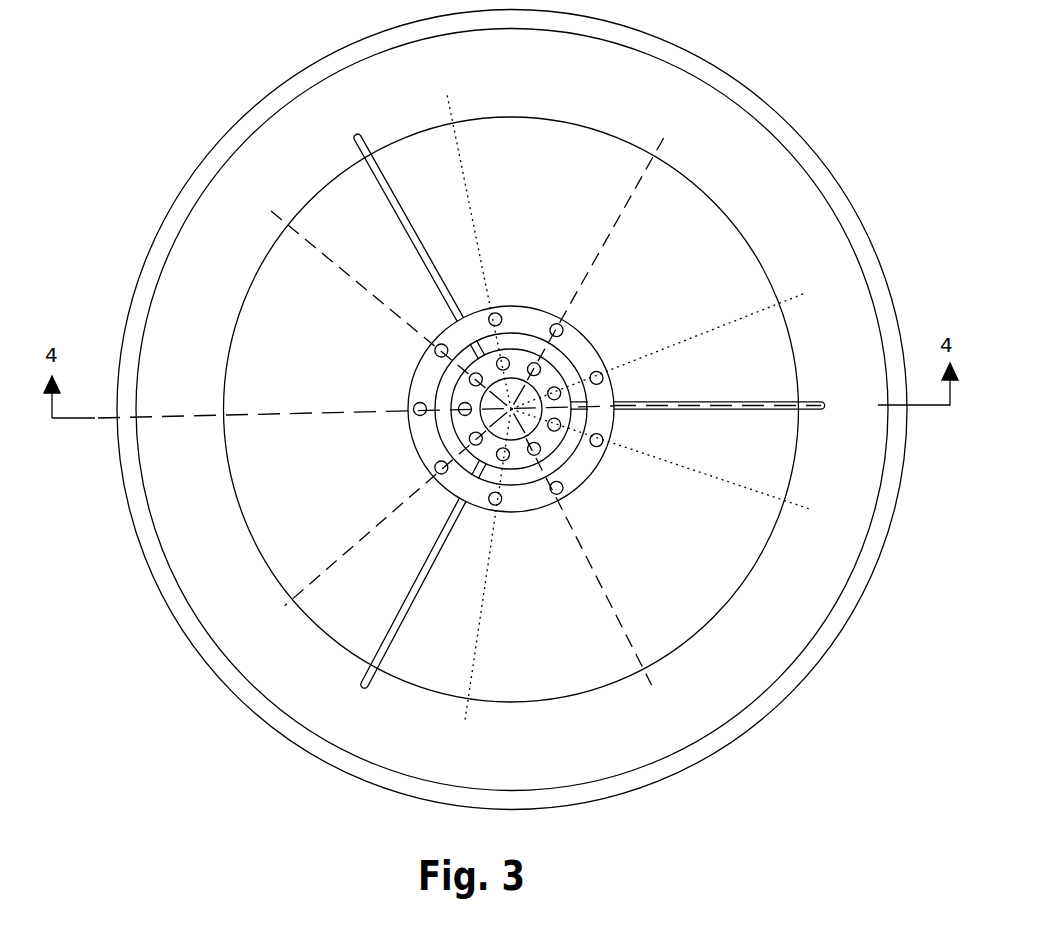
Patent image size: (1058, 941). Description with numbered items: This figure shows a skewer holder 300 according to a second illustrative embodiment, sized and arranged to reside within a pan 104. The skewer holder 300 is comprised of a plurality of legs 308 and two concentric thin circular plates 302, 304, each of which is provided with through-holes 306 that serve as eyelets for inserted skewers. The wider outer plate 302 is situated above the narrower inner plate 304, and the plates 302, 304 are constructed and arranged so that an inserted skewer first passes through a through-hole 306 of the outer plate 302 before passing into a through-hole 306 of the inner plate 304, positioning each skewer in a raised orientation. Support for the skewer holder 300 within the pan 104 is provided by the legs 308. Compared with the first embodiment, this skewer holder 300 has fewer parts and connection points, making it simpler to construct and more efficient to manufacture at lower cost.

The pan 104 is at (726, 93).
The skewer holder 300 is at (818, 393).
The outer plate 302 is at (509, 304).
The inner plate 304 is at (518, 463).
The through-holes 306 is at (554, 387).
The legs 308 is at (404, 216).